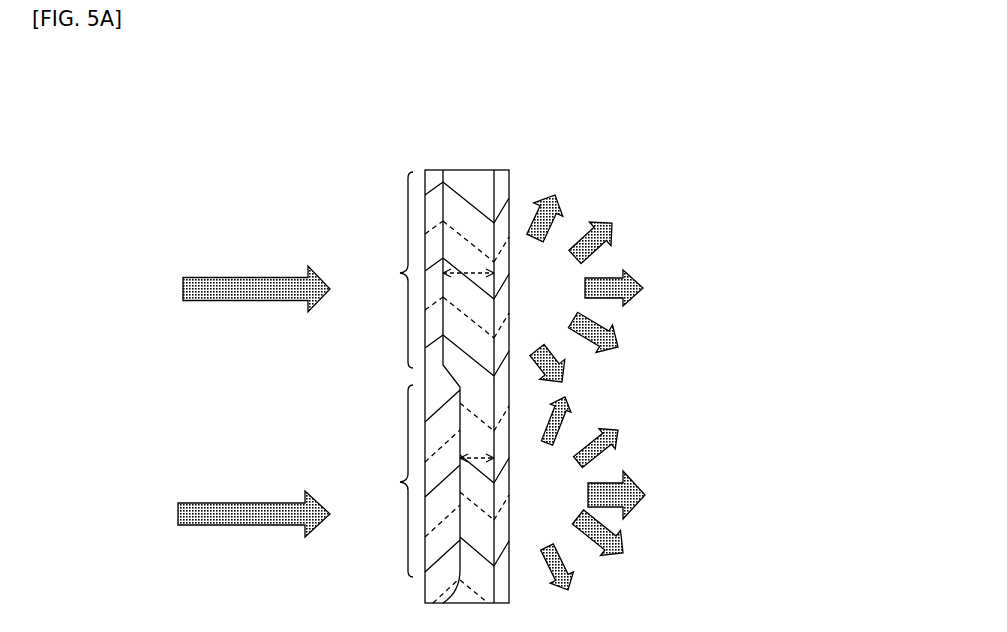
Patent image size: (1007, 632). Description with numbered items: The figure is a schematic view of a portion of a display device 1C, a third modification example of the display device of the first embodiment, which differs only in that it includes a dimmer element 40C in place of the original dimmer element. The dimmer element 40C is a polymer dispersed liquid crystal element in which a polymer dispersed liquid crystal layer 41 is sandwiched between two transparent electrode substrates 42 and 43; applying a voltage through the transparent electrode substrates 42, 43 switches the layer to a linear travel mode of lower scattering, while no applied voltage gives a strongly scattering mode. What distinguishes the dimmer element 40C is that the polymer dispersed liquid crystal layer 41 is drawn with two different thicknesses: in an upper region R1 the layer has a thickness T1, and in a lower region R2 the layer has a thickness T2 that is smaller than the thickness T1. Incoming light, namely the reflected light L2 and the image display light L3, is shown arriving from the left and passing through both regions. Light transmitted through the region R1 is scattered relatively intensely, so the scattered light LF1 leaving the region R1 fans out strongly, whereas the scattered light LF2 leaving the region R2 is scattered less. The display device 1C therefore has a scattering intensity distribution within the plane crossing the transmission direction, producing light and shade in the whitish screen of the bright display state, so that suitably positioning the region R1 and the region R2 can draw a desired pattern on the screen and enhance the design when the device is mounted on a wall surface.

The display device 1C is at (733, 129).
The dimmer element 40C is at (515, 86).
The polymer dispersed liquid crystal layer 41 is at (471, 172).
The transparent electrode substrate 42 is at (428, 170).
The transparent electrode substrate 43 is at (498, 170).
The thickness T1 is at (468, 270).
The thickness T2 is at (470, 456).
The region R1 is at (387, 270).
The region R2 is at (387, 481).
The reflected light L2 is at (254, 437).
The image display light L3 is at (230, 292).
The scattered light LF1 is at (603, 288).
The scattered light LF2 is at (624, 493).